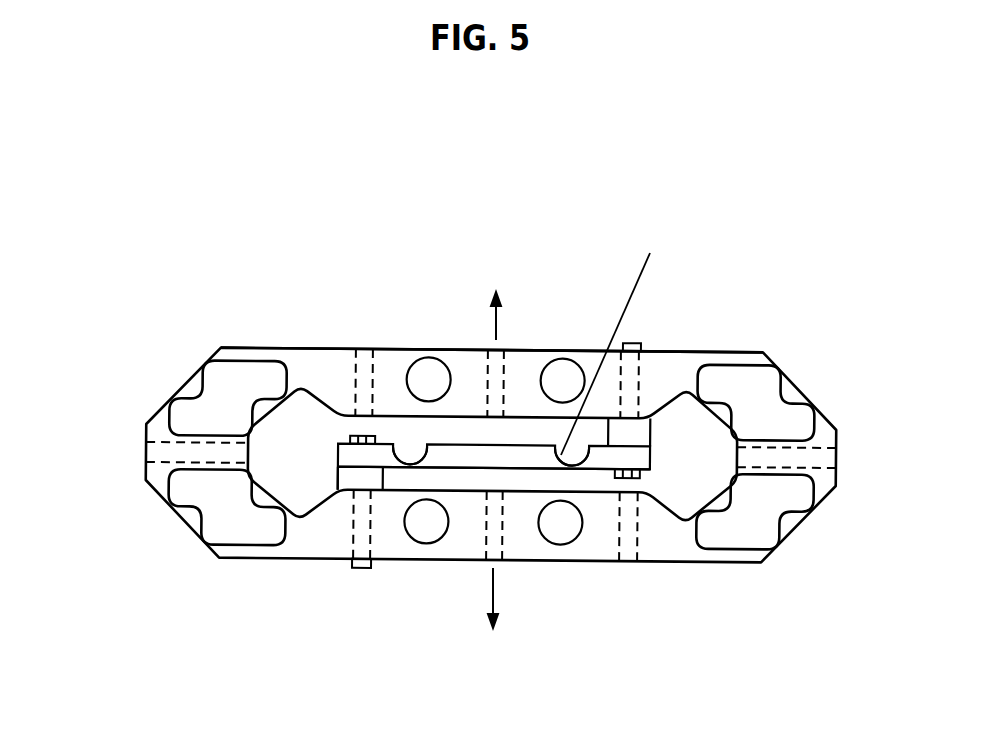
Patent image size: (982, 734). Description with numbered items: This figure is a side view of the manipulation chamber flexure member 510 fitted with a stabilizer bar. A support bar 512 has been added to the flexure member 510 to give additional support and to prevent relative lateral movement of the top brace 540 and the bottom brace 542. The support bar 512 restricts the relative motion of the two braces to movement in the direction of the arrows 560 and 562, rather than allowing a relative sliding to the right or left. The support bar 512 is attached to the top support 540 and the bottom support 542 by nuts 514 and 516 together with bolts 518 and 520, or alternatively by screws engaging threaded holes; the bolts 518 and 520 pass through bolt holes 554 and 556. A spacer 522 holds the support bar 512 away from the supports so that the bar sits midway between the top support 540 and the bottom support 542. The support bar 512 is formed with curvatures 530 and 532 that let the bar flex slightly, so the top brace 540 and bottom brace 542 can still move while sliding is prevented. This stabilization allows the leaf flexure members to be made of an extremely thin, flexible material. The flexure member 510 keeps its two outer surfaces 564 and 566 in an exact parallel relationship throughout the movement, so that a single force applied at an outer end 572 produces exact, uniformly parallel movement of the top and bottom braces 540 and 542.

The flexure member 510 is at (818, 360).
The support bar 512 is at (497, 470).
The nut 514 is at (643, 483).
The nut 516 is at (348, 437).
The bolt 518 is at (360, 570).
The bolt 520 is at (632, 341).
The spacer 522 is at (348, 482).
The curvature 530 is at (395, 455).
The curvature 532 is at (642, 437).
The top brace 540 is at (518, 360).
The bottom brace 542 is at (523, 552).
The bolt hole 554 is at (638, 362).
The bolt hole 556 is at (372, 530).
The arrow 560 is at (498, 310).
The arrow 562 is at (495, 590).
The outer surface 564 is at (385, 350).
The outer surface 566 is at (640, 560).
The outer end 572 is at (145, 467).